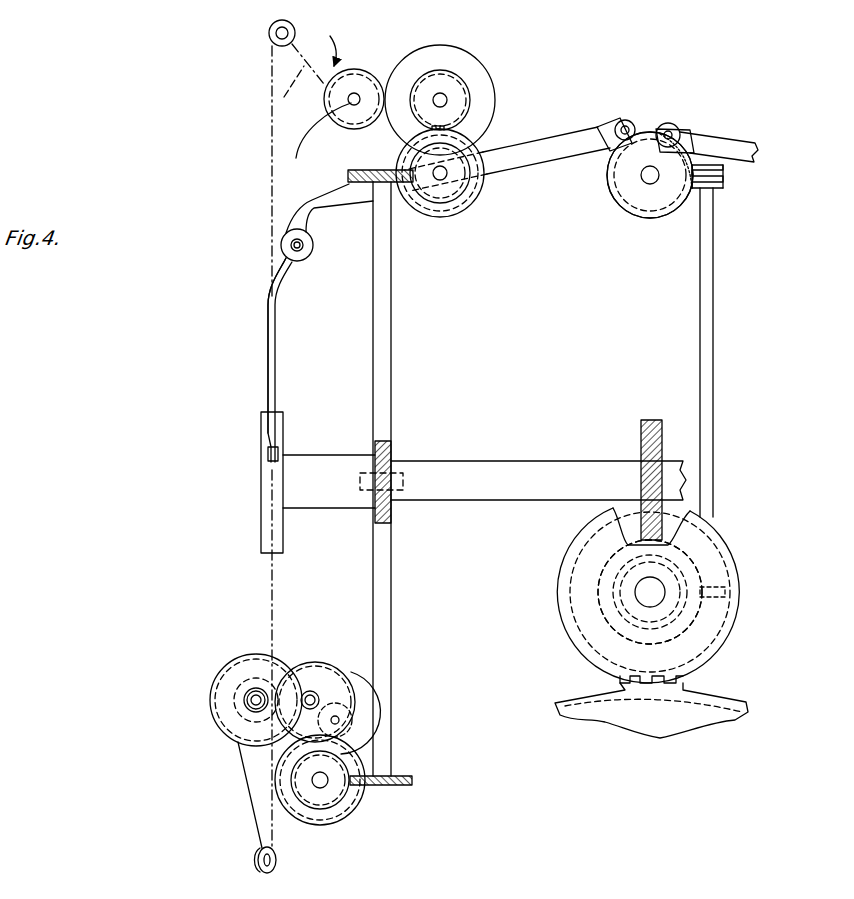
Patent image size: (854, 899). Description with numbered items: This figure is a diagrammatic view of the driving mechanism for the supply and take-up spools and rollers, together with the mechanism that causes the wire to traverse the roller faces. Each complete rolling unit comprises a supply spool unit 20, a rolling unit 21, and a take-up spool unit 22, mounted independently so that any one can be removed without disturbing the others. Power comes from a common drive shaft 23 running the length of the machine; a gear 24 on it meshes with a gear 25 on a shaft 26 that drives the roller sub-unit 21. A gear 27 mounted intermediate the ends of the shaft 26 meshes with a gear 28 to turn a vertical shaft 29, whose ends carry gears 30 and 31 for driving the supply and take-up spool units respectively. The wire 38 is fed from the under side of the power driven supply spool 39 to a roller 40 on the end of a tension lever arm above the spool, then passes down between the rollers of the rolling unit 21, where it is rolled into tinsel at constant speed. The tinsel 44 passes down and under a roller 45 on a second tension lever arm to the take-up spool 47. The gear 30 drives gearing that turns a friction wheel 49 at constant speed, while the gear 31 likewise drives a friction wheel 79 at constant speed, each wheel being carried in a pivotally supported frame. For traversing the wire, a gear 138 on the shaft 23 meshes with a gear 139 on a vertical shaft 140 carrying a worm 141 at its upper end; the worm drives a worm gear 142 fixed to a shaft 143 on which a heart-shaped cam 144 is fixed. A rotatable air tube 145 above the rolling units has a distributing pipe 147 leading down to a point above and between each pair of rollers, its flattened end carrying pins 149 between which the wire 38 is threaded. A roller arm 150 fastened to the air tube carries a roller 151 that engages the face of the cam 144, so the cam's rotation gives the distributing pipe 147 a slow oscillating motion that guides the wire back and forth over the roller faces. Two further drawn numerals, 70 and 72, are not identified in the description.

The supply spool unit 20 is at (324, 39).
The rolling unit 21 is at (256, 428).
The take-up spool unit 22 is at (234, 748).
The common drive shaft 23 is at (645, 588).
The gear 24 is at (672, 525).
The gear 25 is at (640, 445).
The shaft 26 is at (506, 460).
The gear 27 is at (392, 450).
The gear 28 is at (362, 472).
The vertical shaft 29 is at (392, 339).
The gear 30 is at (350, 170).
The gear 31 is at (394, 786).
The wire 38 is at (276, 342).
The supply spool 39 is at (351, 69).
The roller 40 is at (269, 33).
The tinsel 44 is at (272, 597).
The roller 45 is at (257, 862).
The take-up spool 47 is at (240, 690).
The friction wheel 49 is at (493, 82).
The shaft 70 is at (313, 141).
The shaft 72 is at (448, 102).
The friction wheel 79 is at (358, 680).
The gear 138 is at (602, 622).
The gear 139 is at (722, 588).
The vertical shaft 140 is at (714, 376).
The worm 141 is at (724, 181).
The worm gear 142 is at (688, 200).
The shaft 143 is at (645, 177).
The heart-shaped cam 144 is at (607, 182).
The rotatable air tube 145 is at (307, 259).
The distributing pipe 147 is at (267, 311).
The pin 149 is at (268, 452).
The roller arm 150 is at (330, 212).
The roller 151 is at (631, 121).